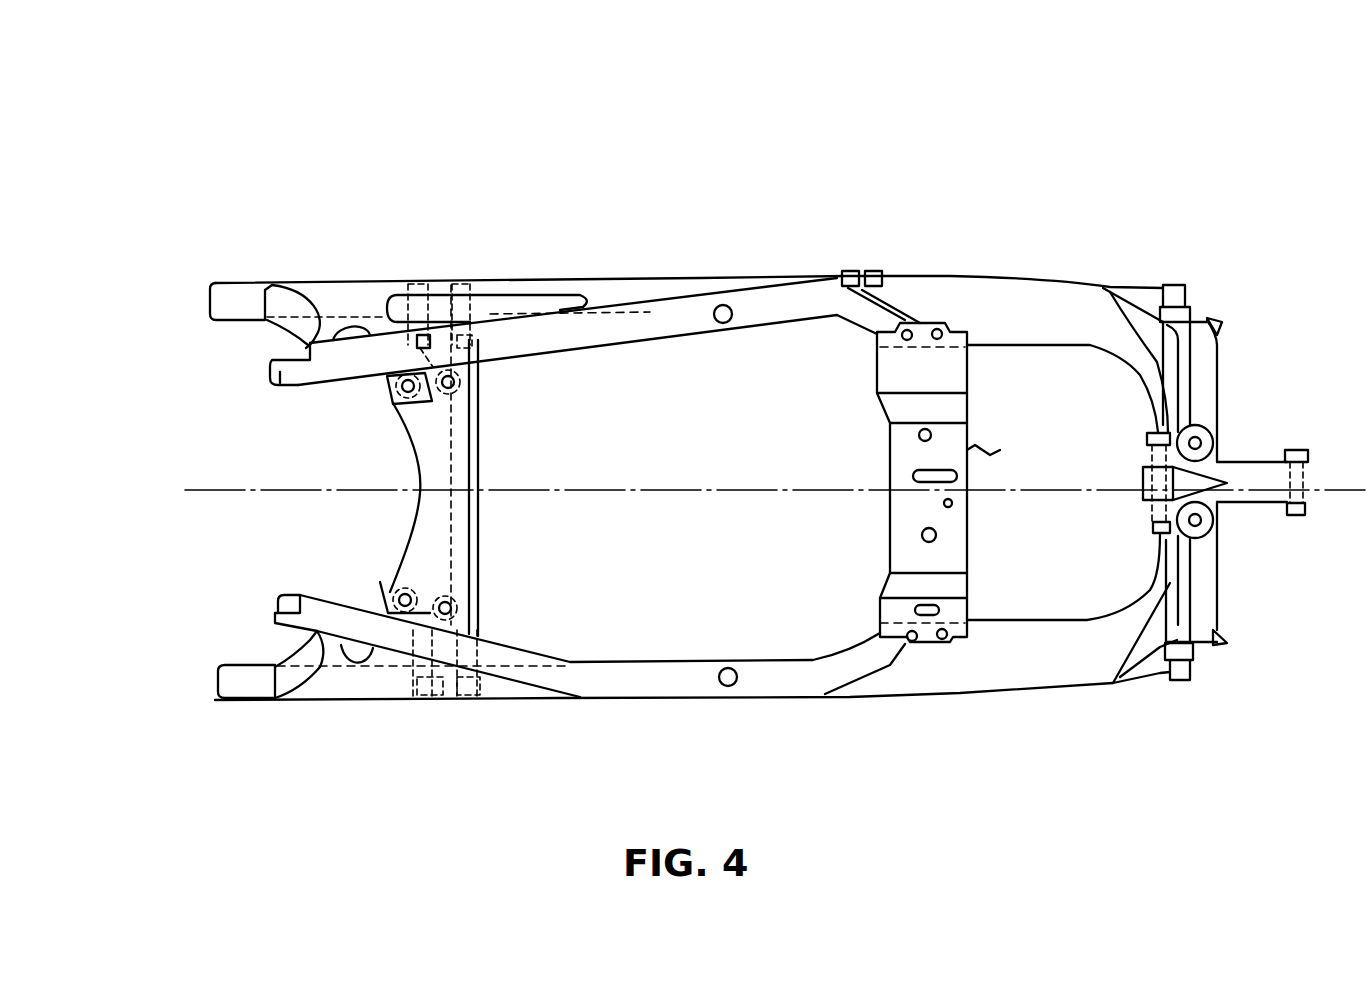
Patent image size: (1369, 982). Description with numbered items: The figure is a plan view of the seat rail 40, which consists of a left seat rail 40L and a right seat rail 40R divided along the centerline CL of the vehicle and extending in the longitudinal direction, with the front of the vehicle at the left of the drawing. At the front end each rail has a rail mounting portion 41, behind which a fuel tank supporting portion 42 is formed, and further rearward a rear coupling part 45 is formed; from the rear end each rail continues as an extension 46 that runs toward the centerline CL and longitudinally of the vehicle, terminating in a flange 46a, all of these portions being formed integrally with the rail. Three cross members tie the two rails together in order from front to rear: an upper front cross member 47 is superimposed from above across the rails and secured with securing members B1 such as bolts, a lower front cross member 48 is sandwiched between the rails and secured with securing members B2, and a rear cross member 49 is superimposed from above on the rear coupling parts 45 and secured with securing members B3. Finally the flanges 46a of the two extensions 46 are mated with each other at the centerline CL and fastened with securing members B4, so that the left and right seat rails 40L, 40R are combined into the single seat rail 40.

The seat rail 40 is at (181, 140).
The right seat rail 40R is at (620, 262).
The left seat rail 40L is at (620, 718).
The rail mounting portion 41 is at (272, 362).
The fuel tank supporting portion 42 is at (345, 326).
The rear coupling part 45 is at (903, 318).
The extension 46 is at (1210, 372).
The flange 46a is at (1263, 487).
The upper front cross member 47 is at (463, 455).
The lower front cross member 48 is at (480, 540).
The rear cross member 49 is at (1000, 450).
The securing member B1 is at (447, 376).
The securing member B2 is at (460, 282).
The securing member B3 is at (938, 329).
The securing member B4 is at (1158, 430).
The centerline CL is at (200, 490).